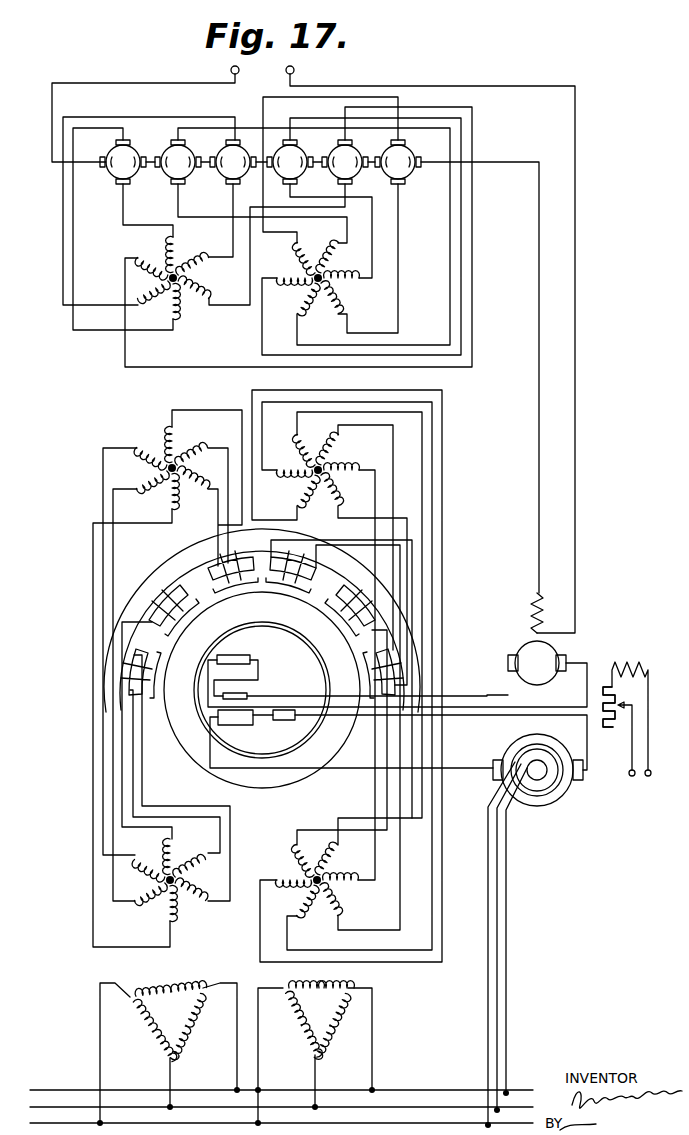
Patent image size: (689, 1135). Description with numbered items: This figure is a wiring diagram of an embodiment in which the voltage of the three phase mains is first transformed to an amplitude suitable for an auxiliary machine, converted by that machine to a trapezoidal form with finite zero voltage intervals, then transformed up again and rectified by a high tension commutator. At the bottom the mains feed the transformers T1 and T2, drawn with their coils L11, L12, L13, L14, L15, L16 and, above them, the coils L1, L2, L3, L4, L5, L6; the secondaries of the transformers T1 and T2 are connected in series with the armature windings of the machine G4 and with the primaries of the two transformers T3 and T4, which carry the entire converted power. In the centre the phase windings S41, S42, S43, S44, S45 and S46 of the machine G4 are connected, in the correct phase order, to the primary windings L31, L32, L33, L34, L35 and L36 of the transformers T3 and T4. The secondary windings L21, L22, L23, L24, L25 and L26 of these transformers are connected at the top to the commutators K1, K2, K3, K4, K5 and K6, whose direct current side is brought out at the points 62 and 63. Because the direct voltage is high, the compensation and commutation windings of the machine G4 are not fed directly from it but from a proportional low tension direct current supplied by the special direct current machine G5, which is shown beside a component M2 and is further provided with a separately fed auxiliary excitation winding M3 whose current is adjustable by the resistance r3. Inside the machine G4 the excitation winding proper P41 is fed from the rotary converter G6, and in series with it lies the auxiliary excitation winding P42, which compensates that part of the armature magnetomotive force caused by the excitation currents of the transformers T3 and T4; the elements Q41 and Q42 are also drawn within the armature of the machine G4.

The commutator K1 is at (123, 162).
The commutator K2 is at (178, 162).
The commutator K3 is at (233, 162).
The commutator K4 is at (290, 162).
The commutator K5 is at (345, 162).
The commutator K6 is at (398, 162).
The control terminal 62 is at (231, 71).
The control terminal 63 is at (294, 71).
The secondary winding L21 is at (178, 238).
The secondary winding L22 is at (322, 250).
The secondary winding L23 is at (206, 257).
The secondary winding L24 is at (345, 292).
The secondary winding L25 is at (190, 300).
The secondary winding L26 is at (320, 305).
The transformer T3 is at (184, 420).
The transformer T4 is at (324, 417).
The primary winding L31 is at (180, 436).
The primary winding L32 is at (312, 448).
The primary winding L33 is at (195, 458).
The primary winding L34 is at (340, 452).
The primary winding L35 is at (176, 500).
The primary winding L36 is at (330, 485).
The phase winding S41 is at (135, 660).
The phase winding S42 is at (160, 592).
The phase winding S43 is at (222, 570).
The phase winding S44 is at (300, 555).
The phase winding S45 is at (355, 600).
The phase winding S46 is at (365, 640).
The rotor winding Q41 is at (235, 658).
The rotor winding Q42 is at (252, 696).
The excitation winding P41 is at (230, 725).
The auxiliary excitation winding P42 is at (284, 722).
The machine G4 is at (262, 790).
The direct current machine G5 is at (510, 660).
The rotary converter G6 is at (565, 792).
The resistor M2 is at (534, 611).
The auxiliary excitation winding M3 is at (630, 662).
The resistance r3 is at (606, 732).
The transformer winding L1 is at (180, 845).
The transformer winding L2 is at (310, 856).
The transformer winding L3 is at (196, 866).
The transformer winding L4 is at (338, 862).
The transformer winding L5 is at (185, 903).
The transformer winding L6 is at (333, 900).
The transformer T1 is at (110, 980).
The transformer T2 is at (349, 990).
The transformer winding L11 is at (180, 1052).
The transformer winding L12 is at (332, 1034).
The transformer winding L13 is at (202, 1022).
The transformer winding L14 is at (296, 986).
The transformer winding L15 is at (145, 992).
The transformer winding L16 is at (292, 1032).